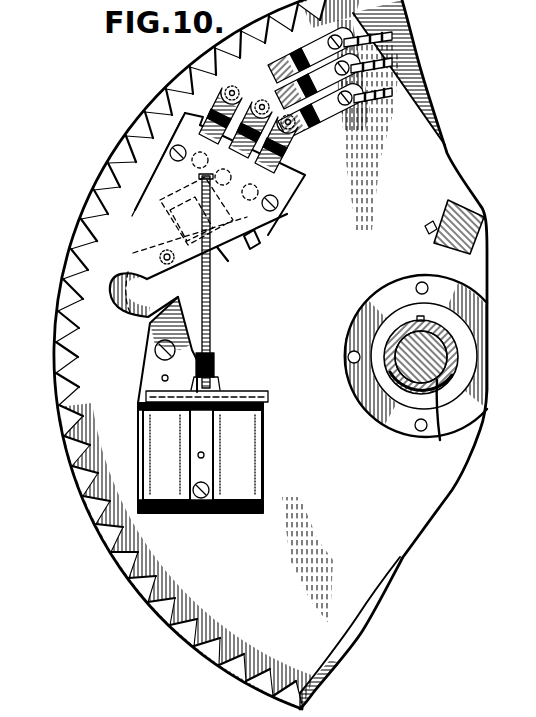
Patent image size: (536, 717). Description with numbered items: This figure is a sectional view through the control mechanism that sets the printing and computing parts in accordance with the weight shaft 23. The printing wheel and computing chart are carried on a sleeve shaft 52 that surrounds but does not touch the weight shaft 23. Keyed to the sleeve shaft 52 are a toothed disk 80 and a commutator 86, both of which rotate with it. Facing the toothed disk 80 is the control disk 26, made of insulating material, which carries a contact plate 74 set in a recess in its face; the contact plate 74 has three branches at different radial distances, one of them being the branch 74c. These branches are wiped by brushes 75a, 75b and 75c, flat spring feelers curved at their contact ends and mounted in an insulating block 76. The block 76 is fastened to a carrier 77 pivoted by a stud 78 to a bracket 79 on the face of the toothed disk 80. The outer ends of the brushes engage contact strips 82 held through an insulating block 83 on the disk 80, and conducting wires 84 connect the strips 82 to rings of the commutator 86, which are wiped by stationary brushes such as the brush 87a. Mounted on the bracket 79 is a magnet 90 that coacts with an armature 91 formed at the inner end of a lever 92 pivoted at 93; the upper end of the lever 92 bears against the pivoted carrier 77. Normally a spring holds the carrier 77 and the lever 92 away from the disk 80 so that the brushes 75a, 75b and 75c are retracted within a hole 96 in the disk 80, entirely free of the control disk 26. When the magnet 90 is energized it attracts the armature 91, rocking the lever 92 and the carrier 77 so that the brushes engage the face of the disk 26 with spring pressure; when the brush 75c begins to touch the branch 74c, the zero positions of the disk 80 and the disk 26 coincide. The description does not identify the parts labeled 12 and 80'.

The tape drive / direction arrow 12 is at (163, 78).
The weight shaft 23 is at (438, 443).
The disk 26 is at (413, 59).
The sleeve shaft 52 is at (392, 372).
The contact plate 74 is at (112, 278).
The branch of contact plate 74c is at (252, 240).
The brush 75a is at (140, 226).
The brush 75b is at (128, 256).
The brush 75c is at (240, 268).
The insulating block 76 is at (270, 187).
The carrier 77 is at (160, 186).
The stud 78 is at (130, 312).
The bracket 79 is at (150, 380).
The toothed disk 80 is at (253, 354).
The housing wall section 80' is at (245, 681).
The contact strips 82 is at (265, 82).
The insulating block 83 is at (319, 79).
The conducting wires 84 is at (374, 50).
The commutator 86 is at (396, 435).
The stationary brush 87a is at (473, 268).
The magnet 90 is at (225, 490).
The armature 91 is at (233, 391).
The lever 92 is at (211, 318).
The pivot 93 is at (215, 371).
The hole 96 is at (188, 126).